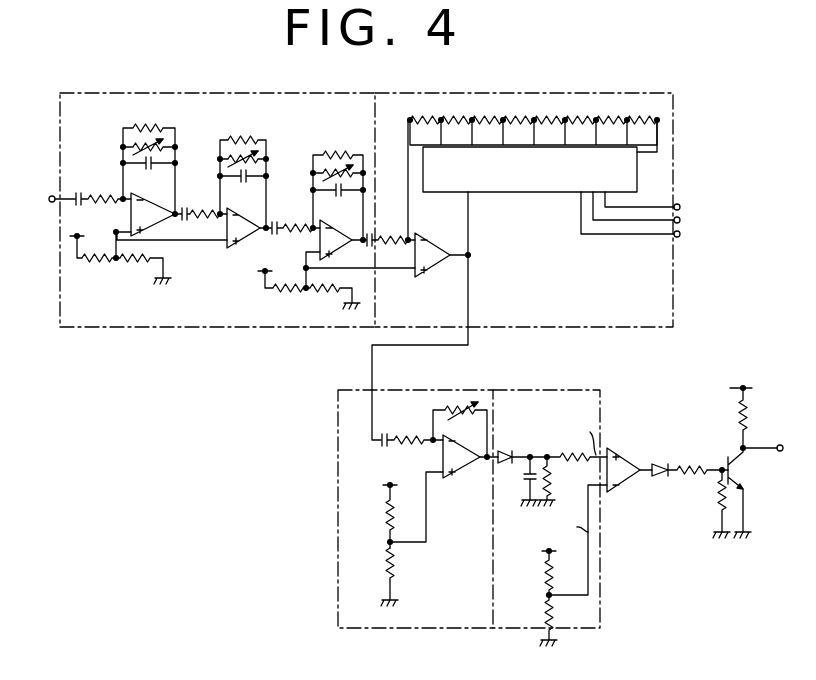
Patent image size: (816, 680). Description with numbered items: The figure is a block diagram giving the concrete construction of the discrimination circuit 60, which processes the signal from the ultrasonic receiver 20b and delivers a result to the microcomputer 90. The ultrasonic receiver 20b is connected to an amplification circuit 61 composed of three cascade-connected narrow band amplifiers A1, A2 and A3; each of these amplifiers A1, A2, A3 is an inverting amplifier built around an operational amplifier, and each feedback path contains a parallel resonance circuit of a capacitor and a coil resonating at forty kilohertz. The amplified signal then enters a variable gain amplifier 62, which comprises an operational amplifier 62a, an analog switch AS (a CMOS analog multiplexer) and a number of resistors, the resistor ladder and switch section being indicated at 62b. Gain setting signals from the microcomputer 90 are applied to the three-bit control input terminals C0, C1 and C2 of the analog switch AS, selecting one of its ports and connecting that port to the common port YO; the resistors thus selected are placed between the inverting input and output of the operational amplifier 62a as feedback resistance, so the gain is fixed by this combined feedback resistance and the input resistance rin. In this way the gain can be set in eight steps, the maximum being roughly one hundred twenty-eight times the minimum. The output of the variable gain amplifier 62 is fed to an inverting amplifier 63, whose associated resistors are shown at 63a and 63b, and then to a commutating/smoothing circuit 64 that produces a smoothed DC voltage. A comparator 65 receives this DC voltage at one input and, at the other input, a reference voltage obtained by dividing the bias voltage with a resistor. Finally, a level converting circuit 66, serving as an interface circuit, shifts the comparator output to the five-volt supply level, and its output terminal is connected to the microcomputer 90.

The discrimination circuit 60 is at (268, 364).
The amplification circuit 61 is at (238, 96).
The variable gain amplifier 62 is at (557, 96).
The operational amplifier 62a is at (432, 273).
The analog switch resistor ladder 62b is at (505, 193).
The inverting amplifier 63 is at (390, 390).
The resistor 63a is at (398, 546).
The resistor 63b is at (433, 438).
The commutating/smoothing circuit 64 is at (520, 390).
The comparator 65 is at (622, 490).
The level converting circuit 66 is at (718, 476).
The narrow band amplifier A1 is at (108, 168).
The narrow band amplifier A2 is at (215, 158).
The narrow band amplifier A3 is at (307, 170).
The analog switch AS is at (637, 160).
The common port YO is at (465, 197).
The input resistance rin is at (383, 229).
The control input terminal C0 is at (580, 199).
The control input terminal C1 is at (580, 225).
The control input terminal C2 is at (615, 200).
The ultrasonic receiver 20b is at (41, 278).
The microcomputer 90 is at (728, 314).